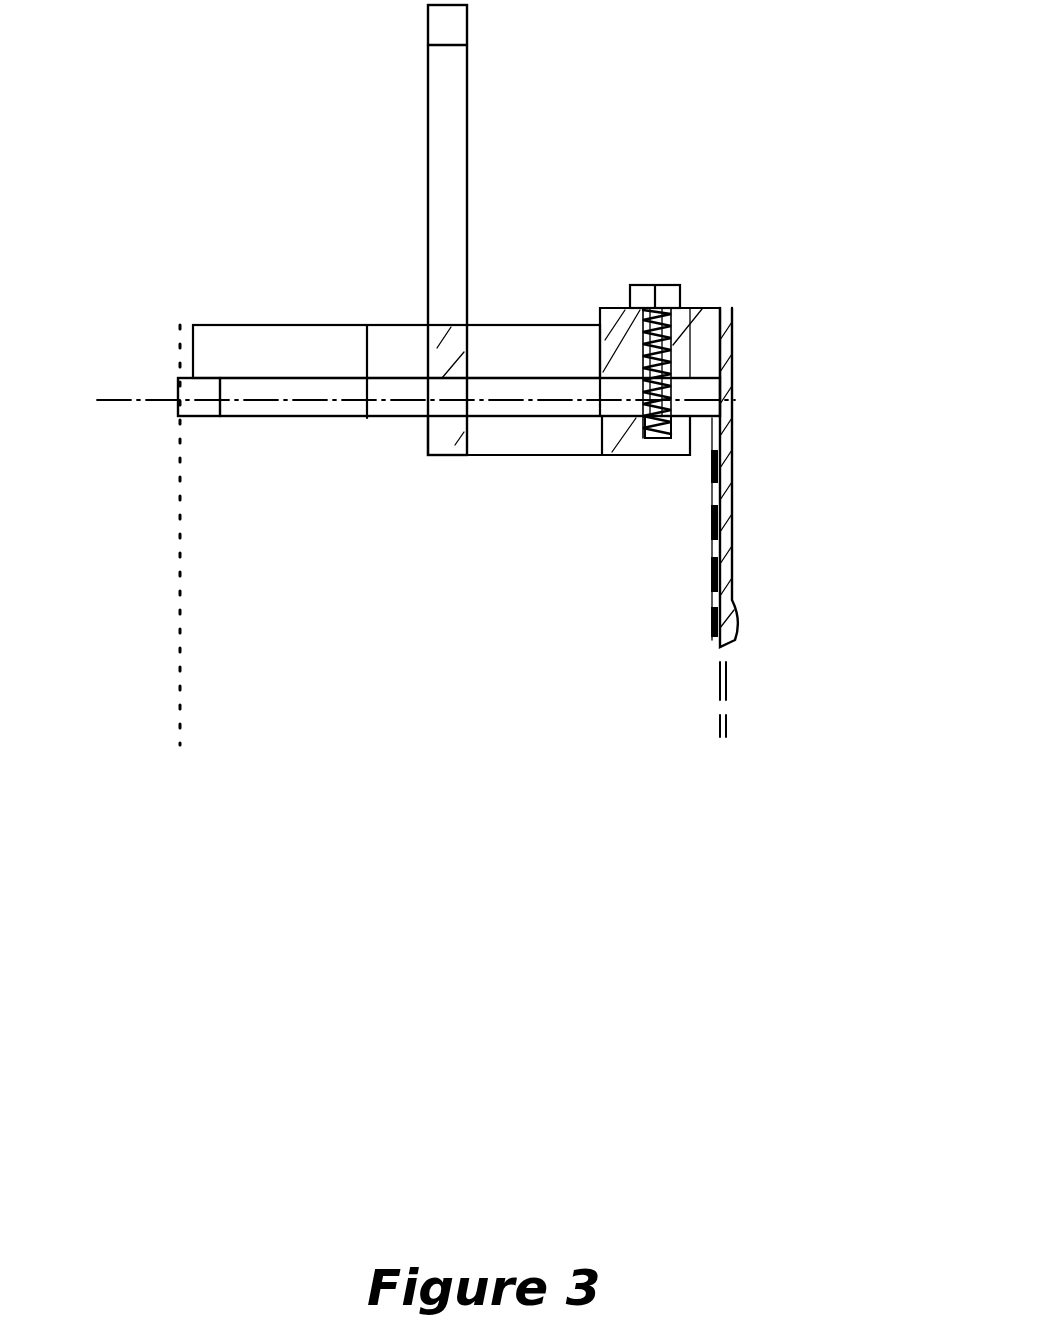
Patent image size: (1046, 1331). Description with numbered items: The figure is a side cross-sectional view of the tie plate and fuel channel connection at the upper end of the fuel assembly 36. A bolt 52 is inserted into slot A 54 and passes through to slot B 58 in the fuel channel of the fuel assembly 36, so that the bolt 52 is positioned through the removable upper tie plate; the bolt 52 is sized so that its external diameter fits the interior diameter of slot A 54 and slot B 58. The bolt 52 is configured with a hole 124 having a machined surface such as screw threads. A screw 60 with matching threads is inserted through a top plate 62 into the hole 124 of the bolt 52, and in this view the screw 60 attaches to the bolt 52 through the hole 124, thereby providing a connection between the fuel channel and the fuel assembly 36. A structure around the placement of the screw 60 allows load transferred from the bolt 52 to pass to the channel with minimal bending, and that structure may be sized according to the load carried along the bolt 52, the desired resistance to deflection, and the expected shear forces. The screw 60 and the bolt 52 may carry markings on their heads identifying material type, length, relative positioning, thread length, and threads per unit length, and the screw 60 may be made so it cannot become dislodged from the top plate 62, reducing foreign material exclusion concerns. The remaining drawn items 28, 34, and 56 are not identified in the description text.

The support wall 28 is at (722, 645).
The vertical bar 34 is at (461, 165).
The fuel assembly 36 is at (293, 256).
The bolt 52 is at (258, 410).
The slot A 54 is at (177, 420).
The clamp block 56 is at (617, 300).
The slot B 58 is at (733, 420).
The screw 60 is at (658, 283).
The top plate 62 is at (733, 308).
The hole 124 is at (652, 418).